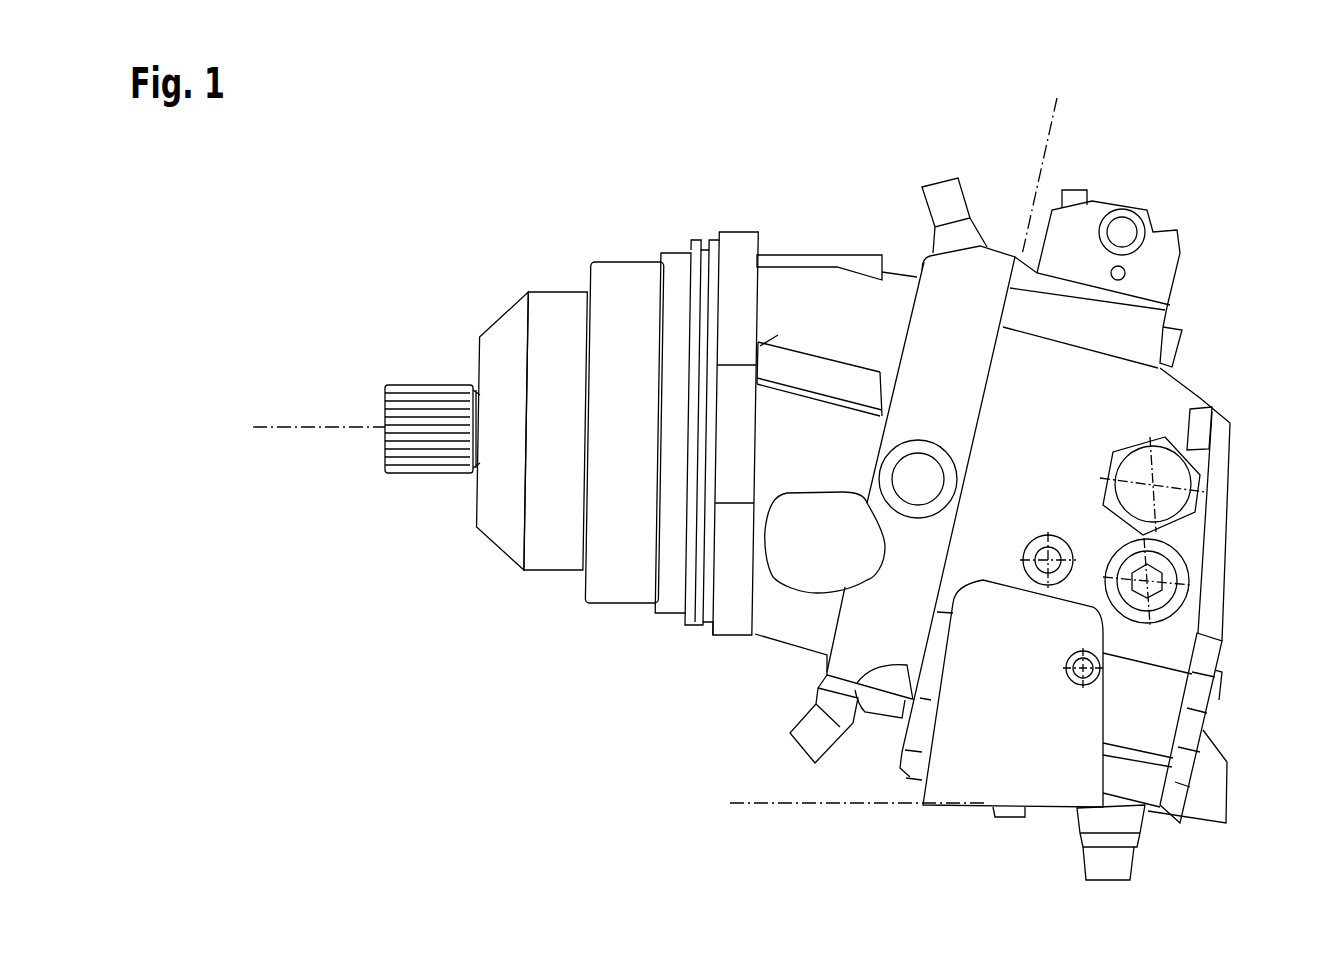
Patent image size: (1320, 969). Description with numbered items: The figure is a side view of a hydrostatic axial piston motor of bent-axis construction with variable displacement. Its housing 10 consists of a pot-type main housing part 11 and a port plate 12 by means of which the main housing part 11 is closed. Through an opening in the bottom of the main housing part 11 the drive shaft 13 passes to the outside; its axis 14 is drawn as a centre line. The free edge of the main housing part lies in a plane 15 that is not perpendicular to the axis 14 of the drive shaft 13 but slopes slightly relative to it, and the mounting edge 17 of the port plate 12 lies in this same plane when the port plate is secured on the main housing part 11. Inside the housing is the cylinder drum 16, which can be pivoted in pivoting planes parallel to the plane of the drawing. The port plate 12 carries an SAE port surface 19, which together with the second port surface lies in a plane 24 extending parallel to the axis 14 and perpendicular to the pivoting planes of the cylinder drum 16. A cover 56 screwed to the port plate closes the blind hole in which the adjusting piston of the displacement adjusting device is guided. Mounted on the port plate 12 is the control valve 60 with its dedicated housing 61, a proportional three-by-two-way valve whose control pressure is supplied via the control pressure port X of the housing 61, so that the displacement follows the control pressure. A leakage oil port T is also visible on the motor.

The housing 10 is at (827, 170).
The main housing part 11 is at (778, 295).
The port plate 12 is at (1130, 343).
The drive shaft 13 is at (405, 385).
The axis of drive shaft 14 is at (270, 420).
The plane 15 is at (1052, 112).
The cylinder drum 16 is at (797, 537).
The mounting edge of port plate 17 is at (855, 700).
The port surface 19 is at (1047, 810).
The fourth plane 24 is at (748, 808).
The cover 56 is at (910, 765).
The control valve 60 is at (1155, 202).
The housing of control valve 61 is at (1160, 275).
The leakage oil port T is at (920, 478).
The control port X is at (1122, 230).